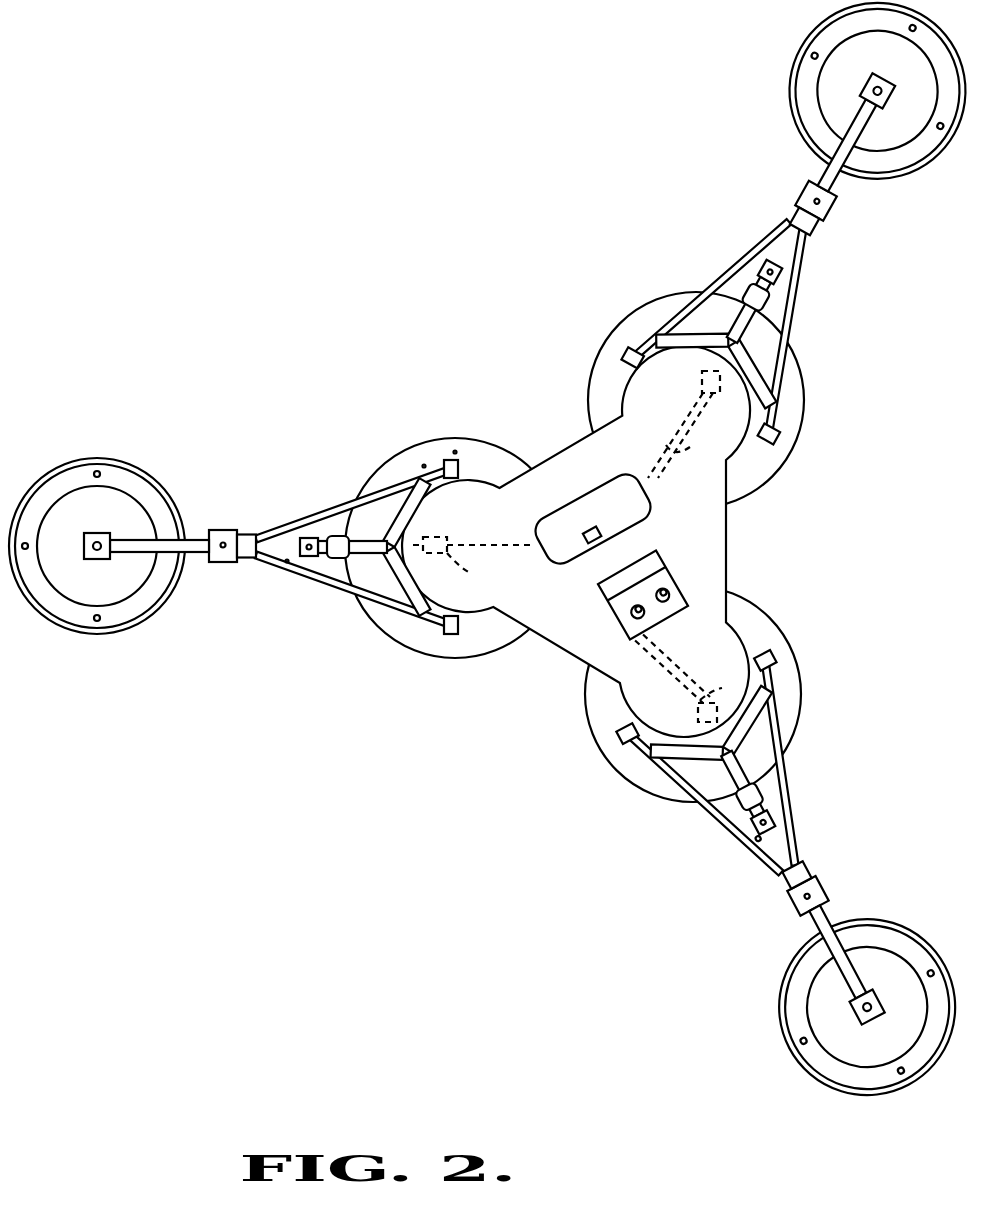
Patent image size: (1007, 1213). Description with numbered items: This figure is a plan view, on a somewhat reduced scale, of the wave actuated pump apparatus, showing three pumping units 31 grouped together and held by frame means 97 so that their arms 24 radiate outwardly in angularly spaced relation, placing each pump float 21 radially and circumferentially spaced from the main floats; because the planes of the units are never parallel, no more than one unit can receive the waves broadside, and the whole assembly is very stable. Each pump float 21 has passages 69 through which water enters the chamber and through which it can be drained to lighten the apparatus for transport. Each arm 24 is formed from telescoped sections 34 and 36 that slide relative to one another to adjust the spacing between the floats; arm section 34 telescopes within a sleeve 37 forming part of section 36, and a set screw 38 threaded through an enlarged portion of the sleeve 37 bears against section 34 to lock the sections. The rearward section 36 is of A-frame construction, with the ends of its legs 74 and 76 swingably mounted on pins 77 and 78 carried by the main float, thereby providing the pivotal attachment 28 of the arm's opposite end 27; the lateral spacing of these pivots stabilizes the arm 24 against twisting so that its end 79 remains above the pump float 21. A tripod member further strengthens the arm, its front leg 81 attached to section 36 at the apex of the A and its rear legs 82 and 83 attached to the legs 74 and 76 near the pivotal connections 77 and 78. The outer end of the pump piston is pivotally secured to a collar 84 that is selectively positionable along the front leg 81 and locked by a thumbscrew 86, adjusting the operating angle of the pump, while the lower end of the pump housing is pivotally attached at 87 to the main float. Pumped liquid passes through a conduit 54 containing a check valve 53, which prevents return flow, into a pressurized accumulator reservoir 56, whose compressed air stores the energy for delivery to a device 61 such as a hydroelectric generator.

The pump float 21 is at (800, 36).
The arm 24 is at (287, 563).
The opposite end 27 is at (423, 463).
The pivotal attachment 28 is at (456, 450).
The pumping unit 31 is at (544, 558).
The arm section 34 is at (838, 133).
The arm section 36 is at (570, 563).
The sleeve 37 is at (812, 190).
The set screw 38 is at (820, 212).
The check valve 53 is at (701, 380).
The conduit 54 is at (680, 440).
The accumulator reservoir 56 is at (597, 493).
The device 61 is at (653, 548).
The passages 69 is at (803, 68).
The leg 74 is at (792, 366).
The leg 76 is at (722, 290).
The pin 77 is at (790, 440).
The pin 78 is at (627, 350).
The end 79 is at (862, 112).
The front leg 81 is at (770, 330).
The rear leg 82 is at (776, 382).
The rear leg 83 is at (680, 340).
The collar 84 is at (763, 272).
The thumbscrew 86 is at (790, 290).
The pivotal attachment 87 is at (765, 836).
The frame means 97 is at (731, 548).